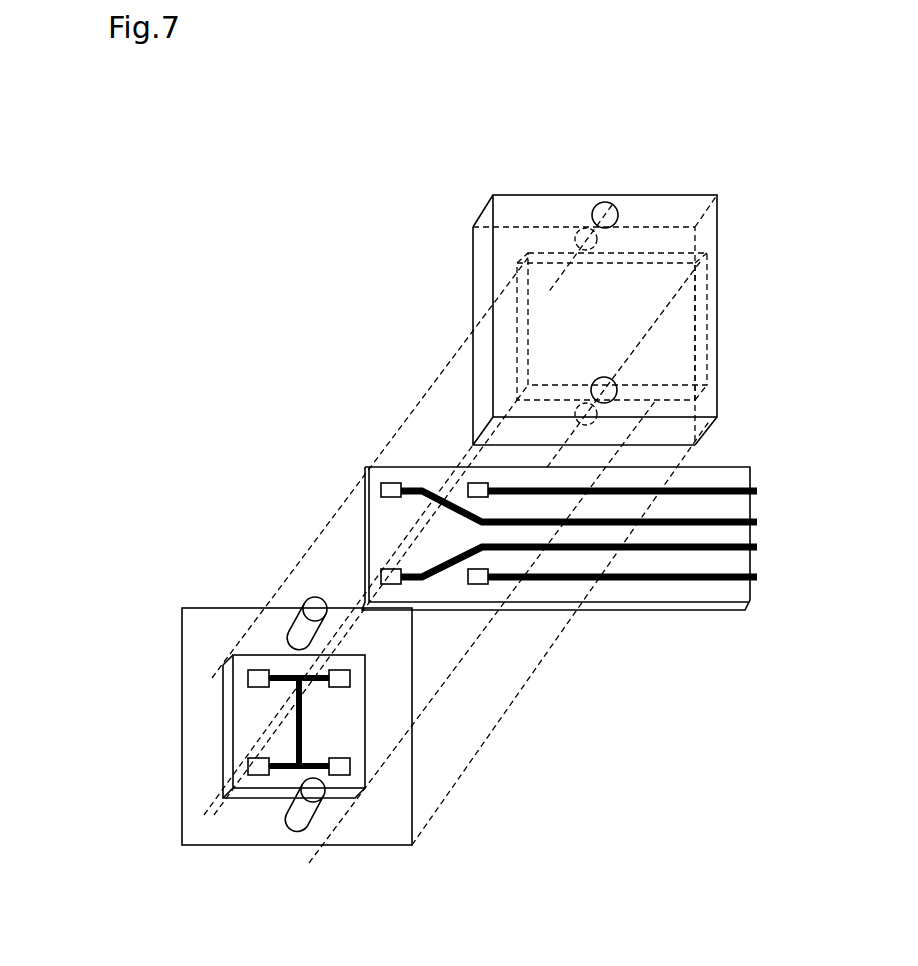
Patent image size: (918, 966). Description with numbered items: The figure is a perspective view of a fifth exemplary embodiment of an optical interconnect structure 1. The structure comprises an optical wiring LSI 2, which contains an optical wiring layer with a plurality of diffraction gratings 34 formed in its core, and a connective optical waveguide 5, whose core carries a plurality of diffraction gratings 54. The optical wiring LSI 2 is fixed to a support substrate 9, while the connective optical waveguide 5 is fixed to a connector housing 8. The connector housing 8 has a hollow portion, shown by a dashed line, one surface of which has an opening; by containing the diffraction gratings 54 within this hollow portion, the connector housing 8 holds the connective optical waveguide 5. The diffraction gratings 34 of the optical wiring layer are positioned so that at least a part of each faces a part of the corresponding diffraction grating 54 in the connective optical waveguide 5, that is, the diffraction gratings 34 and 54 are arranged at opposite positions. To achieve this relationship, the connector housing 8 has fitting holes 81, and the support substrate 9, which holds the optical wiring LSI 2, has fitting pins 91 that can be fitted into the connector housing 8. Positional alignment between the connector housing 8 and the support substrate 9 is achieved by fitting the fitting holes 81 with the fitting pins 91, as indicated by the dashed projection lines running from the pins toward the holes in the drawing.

The optical interconnect structure 1 is at (756, 866).
The optical wiring LSI 2 is at (193, 671).
The connective optical waveguide 5 is at (688, 593).
The connector housing 8 is at (686, 207).
The support substrate 9 is at (400, 815).
The diffraction grating 34 is at (262, 678).
The diffraction grating 54 is at (386, 486).
The fitting hole 81 is at (594, 206).
The fitting pin 91 is at (296, 822).